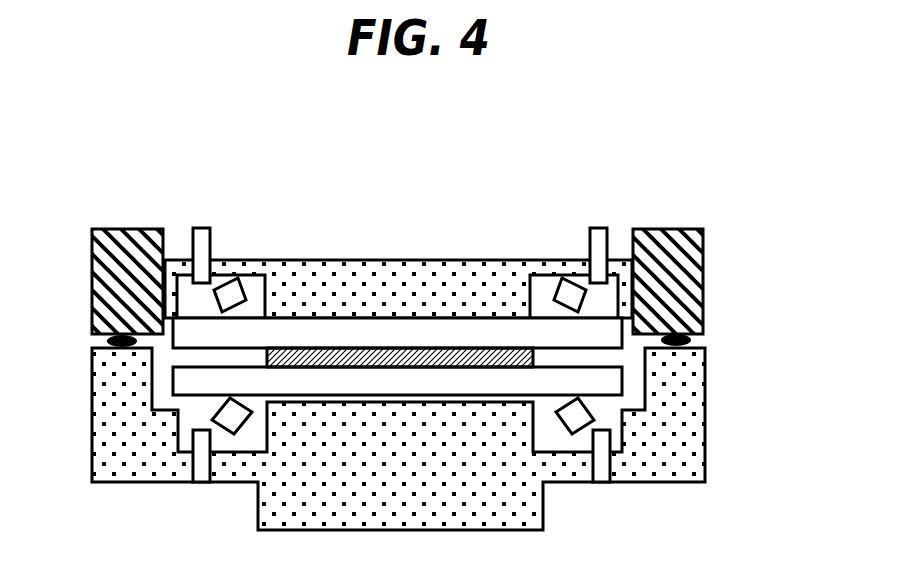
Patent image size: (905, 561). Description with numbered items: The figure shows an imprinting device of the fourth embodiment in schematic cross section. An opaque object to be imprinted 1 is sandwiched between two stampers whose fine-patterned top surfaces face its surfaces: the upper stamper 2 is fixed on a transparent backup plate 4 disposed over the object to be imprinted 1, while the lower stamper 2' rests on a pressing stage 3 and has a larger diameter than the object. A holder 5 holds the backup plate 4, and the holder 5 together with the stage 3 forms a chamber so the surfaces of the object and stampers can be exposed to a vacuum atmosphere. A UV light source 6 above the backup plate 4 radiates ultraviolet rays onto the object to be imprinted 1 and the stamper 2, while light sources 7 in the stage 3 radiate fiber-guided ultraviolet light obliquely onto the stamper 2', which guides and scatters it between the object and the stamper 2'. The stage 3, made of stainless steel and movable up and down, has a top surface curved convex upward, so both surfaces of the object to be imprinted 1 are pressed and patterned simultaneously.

The object to be imprinted 1 is at (325, 348).
The stamper 2 is at (422, 251).
The stamper 2' is at (470, 374).
The pressing stage 3 is at (473, 438).
The transparent backup plate 4 is at (517, 287).
The holder 5 is at (678, 288).
The UV light source 6 is at (596, 228).
The light sources 7 is at (200, 228).